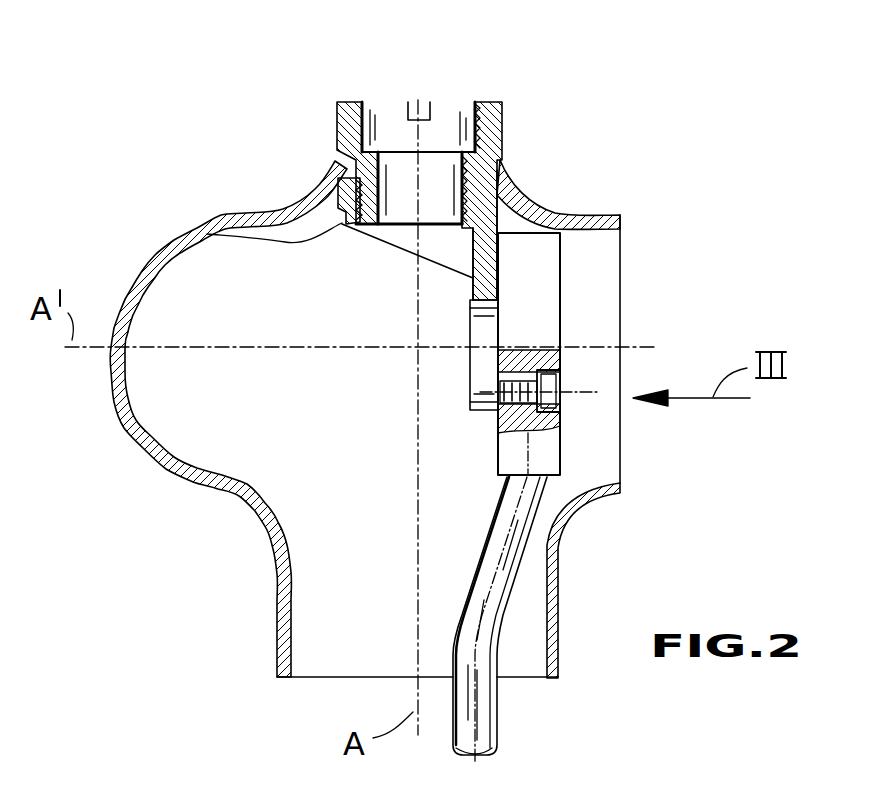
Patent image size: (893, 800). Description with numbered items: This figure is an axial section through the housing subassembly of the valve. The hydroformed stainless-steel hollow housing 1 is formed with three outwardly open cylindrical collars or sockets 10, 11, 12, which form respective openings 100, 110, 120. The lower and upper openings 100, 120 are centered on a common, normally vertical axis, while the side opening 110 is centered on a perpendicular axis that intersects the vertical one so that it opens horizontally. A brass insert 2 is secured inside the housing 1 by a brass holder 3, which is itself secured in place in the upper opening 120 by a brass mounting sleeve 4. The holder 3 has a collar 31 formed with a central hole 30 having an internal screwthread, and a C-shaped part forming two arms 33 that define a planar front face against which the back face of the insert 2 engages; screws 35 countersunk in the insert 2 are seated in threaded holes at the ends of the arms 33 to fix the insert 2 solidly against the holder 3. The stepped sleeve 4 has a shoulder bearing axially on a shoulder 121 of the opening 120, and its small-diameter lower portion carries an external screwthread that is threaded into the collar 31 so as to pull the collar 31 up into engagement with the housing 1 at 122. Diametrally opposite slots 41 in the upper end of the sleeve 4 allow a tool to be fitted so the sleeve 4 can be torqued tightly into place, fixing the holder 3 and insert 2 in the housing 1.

The housing 1 is at (562, 553).
The insert 2 is at (537, 289).
The holder 3 is at (392, 252).
The mounting sleeve 4 is at (450, 125).
The collar 10 is at (196, 419).
The collar 11 is at (585, 215).
The collar 12 is at (335, 137).
The central hole 30 is at (207, 234).
The collar 31 is at (340, 180).
The arms 33 is at (485, 372).
The screws 35 is at (560, 380).
The slots 41 is at (420, 100).
The opening 100 is at (358, 620).
The opening 110 is at (598, 455).
The opening 120 is at (505, 101).
The shoulder 121 is at (505, 158).
The engagement location 122 is at (505, 170).